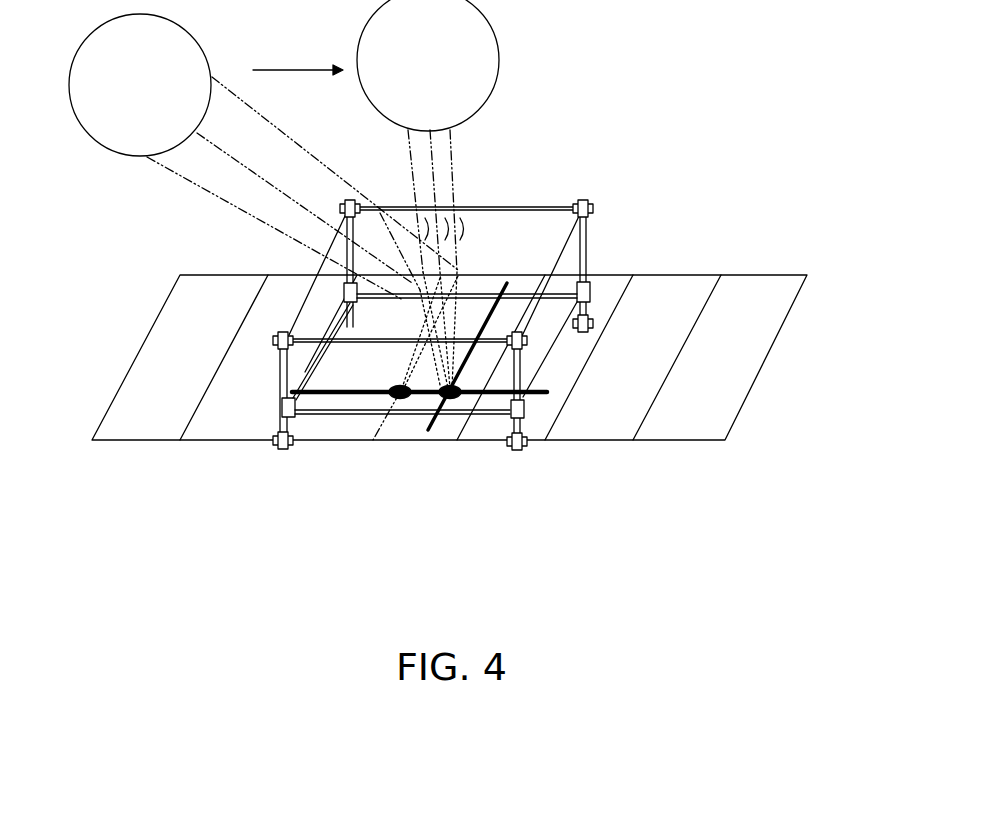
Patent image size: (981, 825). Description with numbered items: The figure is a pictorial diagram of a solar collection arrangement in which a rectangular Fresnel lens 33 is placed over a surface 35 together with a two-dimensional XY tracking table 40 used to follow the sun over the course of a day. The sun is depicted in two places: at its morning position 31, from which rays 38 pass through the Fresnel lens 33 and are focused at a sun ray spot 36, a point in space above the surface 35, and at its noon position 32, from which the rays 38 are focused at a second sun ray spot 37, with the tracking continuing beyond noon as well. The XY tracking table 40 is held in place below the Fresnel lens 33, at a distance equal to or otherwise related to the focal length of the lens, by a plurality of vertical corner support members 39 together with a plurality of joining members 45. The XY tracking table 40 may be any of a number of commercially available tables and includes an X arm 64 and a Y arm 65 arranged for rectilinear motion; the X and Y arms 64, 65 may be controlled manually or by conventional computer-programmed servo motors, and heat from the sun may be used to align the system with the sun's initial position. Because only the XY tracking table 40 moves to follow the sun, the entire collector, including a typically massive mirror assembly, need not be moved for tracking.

The morning position 31 is at (107, 148).
The noon position 32 is at (490, 68).
The rays 38 is at (190, 193).
The rectangular Fresnel lens 33 is at (288, 328).
The surface 35 is at (152, 440).
The vertical corner support members 39 is at (591, 298).
The XY tracking table 40 is at (278, 367).
The joining members 45 is at (588, 205).
The sun ray spot 36 is at (458, 397).
The sun ray spot 37 is at (397, 397).
The X arm 64 is at (348, 397).
The Y arm 65 is at (442, 400).